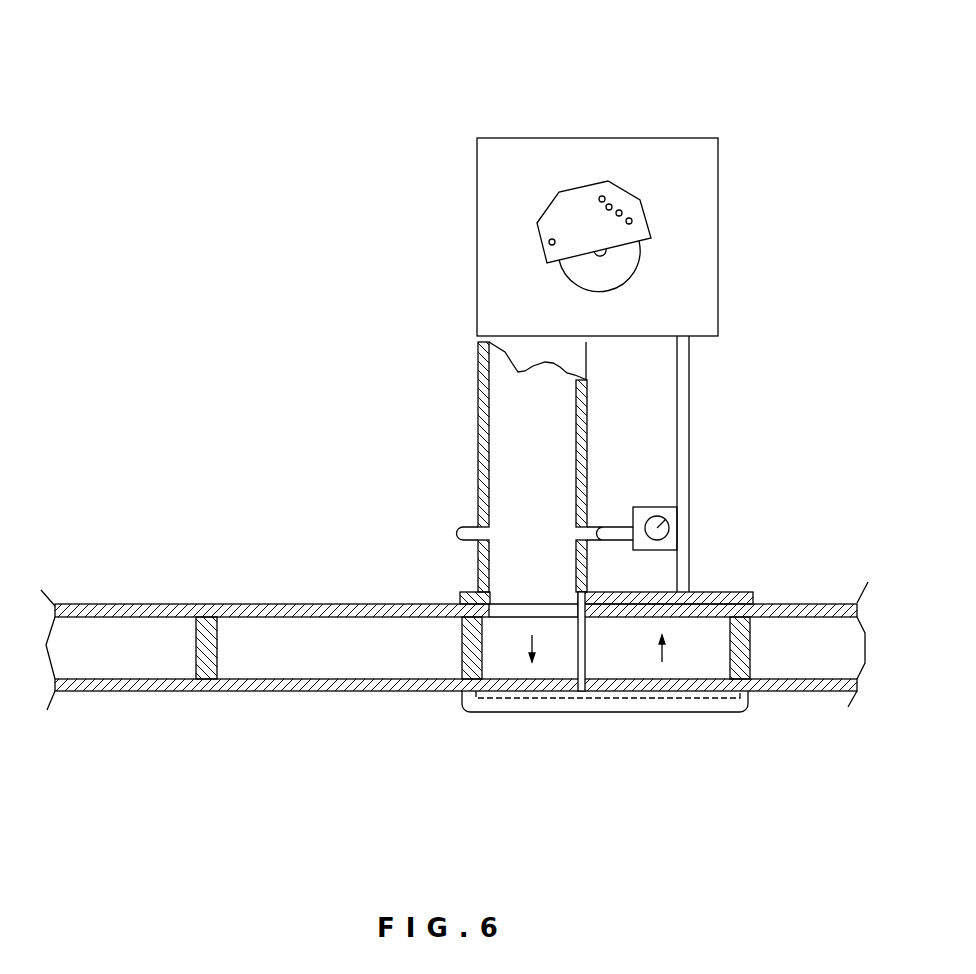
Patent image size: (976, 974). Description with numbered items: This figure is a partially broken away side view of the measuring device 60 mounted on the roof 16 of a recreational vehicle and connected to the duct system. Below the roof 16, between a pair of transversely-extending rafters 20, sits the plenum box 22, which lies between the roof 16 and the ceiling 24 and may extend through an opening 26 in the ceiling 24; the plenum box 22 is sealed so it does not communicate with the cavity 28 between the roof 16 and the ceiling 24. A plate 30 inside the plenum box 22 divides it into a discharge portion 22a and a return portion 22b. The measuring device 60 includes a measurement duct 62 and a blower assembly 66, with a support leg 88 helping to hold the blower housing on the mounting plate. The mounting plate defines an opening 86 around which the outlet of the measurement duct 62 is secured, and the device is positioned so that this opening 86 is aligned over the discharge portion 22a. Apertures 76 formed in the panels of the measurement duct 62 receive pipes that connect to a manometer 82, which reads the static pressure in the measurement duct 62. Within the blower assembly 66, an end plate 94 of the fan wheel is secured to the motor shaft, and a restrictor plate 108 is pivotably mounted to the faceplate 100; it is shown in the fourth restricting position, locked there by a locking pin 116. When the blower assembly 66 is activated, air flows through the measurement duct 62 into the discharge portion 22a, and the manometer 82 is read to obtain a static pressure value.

The roof 16 is at (790, 615).
The rafters 20 is at (195, 652).
The plenum box 22 is at (606, 665).
The discharge portion 22a is at (504, 657).
The return portion 22b is at (673, 700).
The ceiling 24 is at (102, 688).
The opening 26 is at (530, 691).
The cavity 28 is at (305, 662).
The plate 30 is at (577, 663).
The measuring device 60 is at (755, 170).
The measurement duct 62 is at (465, 413).
The blower assembly 66 is at (503, 120).
The apertures 76 is at (580, 532).
The manometer 82 is at (643, 510).
The opening 86 is at (527, 590).
The support leg 88 is at (679, 408).
The end plate 94 is at (607, 273).
The faceplate 100 is at (687, 180).
The restrictor plate 108 is at (575, 203).
The locking pin 116 is at (603, 197).